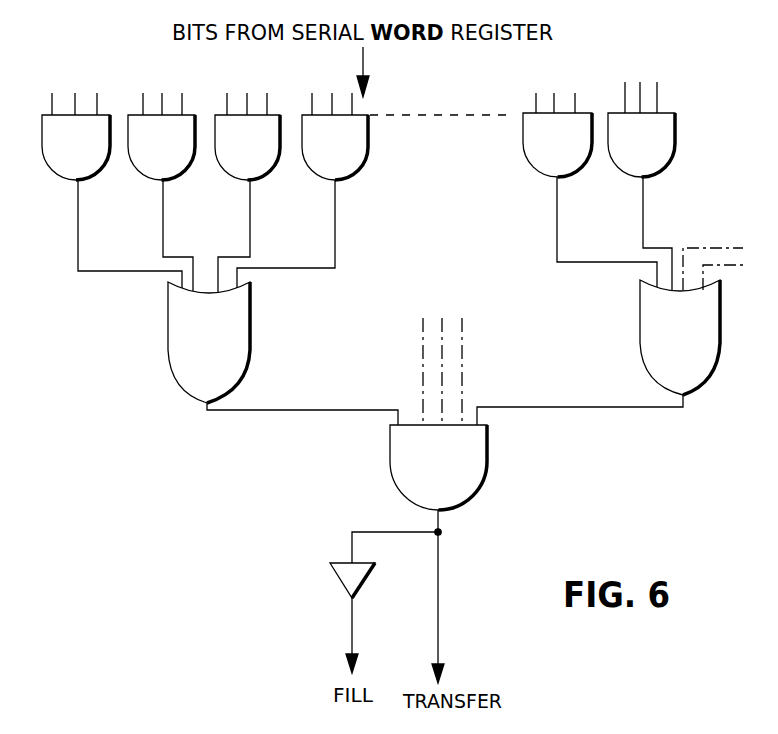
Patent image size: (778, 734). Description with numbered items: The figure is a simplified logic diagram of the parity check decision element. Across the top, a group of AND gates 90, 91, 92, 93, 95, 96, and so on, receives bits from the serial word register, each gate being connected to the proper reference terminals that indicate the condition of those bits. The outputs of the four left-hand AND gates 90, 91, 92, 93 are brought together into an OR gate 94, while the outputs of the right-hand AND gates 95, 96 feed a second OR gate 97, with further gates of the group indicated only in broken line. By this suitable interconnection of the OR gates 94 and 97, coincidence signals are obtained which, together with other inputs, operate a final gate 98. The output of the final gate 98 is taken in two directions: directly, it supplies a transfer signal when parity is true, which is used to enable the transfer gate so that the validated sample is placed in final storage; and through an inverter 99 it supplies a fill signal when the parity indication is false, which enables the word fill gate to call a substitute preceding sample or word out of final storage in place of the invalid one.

The AND gate 90 is at (68, 177).
The AND gate 91 is at (158, 177).
The AND gate 92 is at (247, 175).
The AND gate 93 is at (333, 172).
The OR gate 94 is at (245, 323).
The AND gate 95 is at (553, 168).
The AND gate 96 is at (625, 163).
The OR gate 97 is at (647, 327).
The final gate 98 is at (482, 458).
The inverter 99 is at (333, 572).